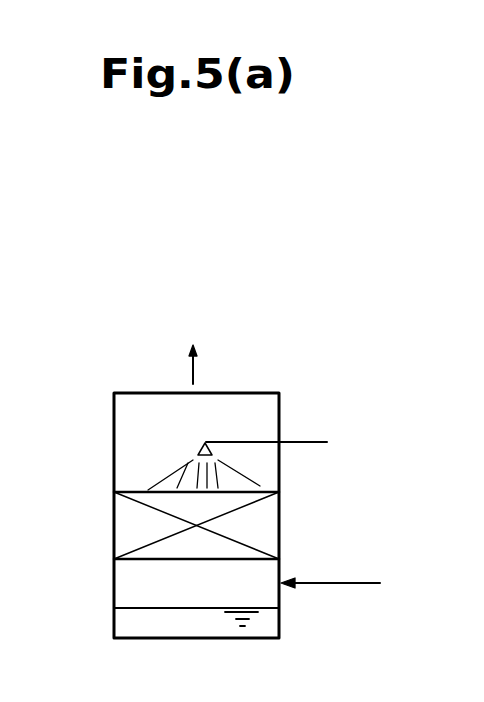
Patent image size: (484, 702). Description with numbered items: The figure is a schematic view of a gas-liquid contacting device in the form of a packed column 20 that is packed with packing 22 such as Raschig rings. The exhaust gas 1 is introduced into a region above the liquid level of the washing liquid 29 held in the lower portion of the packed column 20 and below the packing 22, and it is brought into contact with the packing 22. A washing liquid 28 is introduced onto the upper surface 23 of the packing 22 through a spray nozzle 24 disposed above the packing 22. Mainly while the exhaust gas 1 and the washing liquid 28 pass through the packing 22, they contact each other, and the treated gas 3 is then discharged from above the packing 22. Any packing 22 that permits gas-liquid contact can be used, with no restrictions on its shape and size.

The exhaust gas 1 is at (352, 583).
The treated gas outlet 3 is at (193, 364).
The packed column 20 is at (82, 541).
The packing 22 is at (263, 551).
The upper surface of the packing 23 is at (136, 494).
The spray nozzle 24 is at (201, 447).
The washing liquid 28 is at (297, 442).
The washing liquid 29 is at (274, 630).